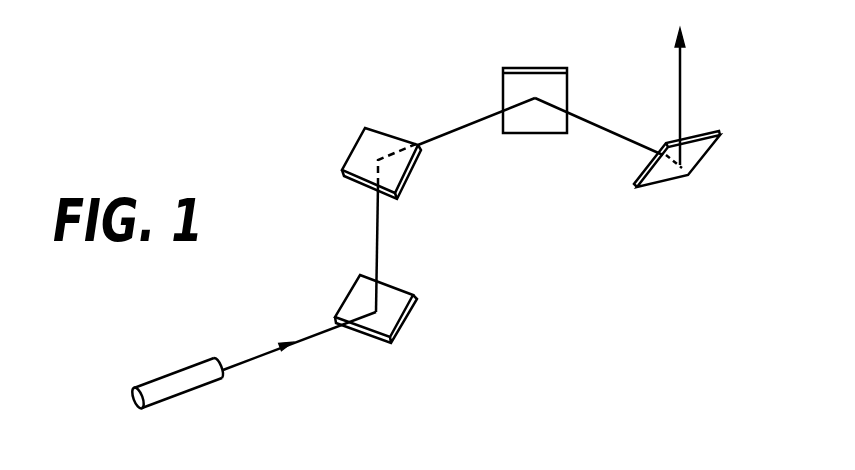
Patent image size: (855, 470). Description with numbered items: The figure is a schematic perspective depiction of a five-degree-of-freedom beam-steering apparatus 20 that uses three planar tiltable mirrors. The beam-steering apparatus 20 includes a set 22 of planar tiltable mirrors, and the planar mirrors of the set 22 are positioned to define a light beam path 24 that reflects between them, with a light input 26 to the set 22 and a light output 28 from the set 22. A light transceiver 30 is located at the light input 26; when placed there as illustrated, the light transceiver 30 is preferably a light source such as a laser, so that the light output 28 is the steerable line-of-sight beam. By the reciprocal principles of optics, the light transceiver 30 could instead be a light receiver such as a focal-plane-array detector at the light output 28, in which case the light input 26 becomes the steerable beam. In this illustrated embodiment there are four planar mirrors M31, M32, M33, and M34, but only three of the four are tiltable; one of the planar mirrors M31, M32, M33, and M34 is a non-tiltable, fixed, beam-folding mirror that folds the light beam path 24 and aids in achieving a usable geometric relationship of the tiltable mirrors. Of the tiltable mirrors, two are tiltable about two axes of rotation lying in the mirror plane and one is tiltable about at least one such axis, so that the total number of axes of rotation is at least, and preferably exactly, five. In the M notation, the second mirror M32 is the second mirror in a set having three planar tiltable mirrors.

The beam-steering apparatus 20 is at (388, 68).
The set of planar tiltable mirrors 22 is at (340, 145).
The light beam path 24 is at (448, 135).
The light input 26 is at (253, 354).
The light output 28 is at (683, 75).
The light transceiver 30 is at (172, 391).
The first planar mirror M31 is at (375, 325).
The second planar mirror M32 is at (381, 148).
The third planar mirror M33 is at (579, 94).
The fourth planar mirror M34 is at (676, 179).